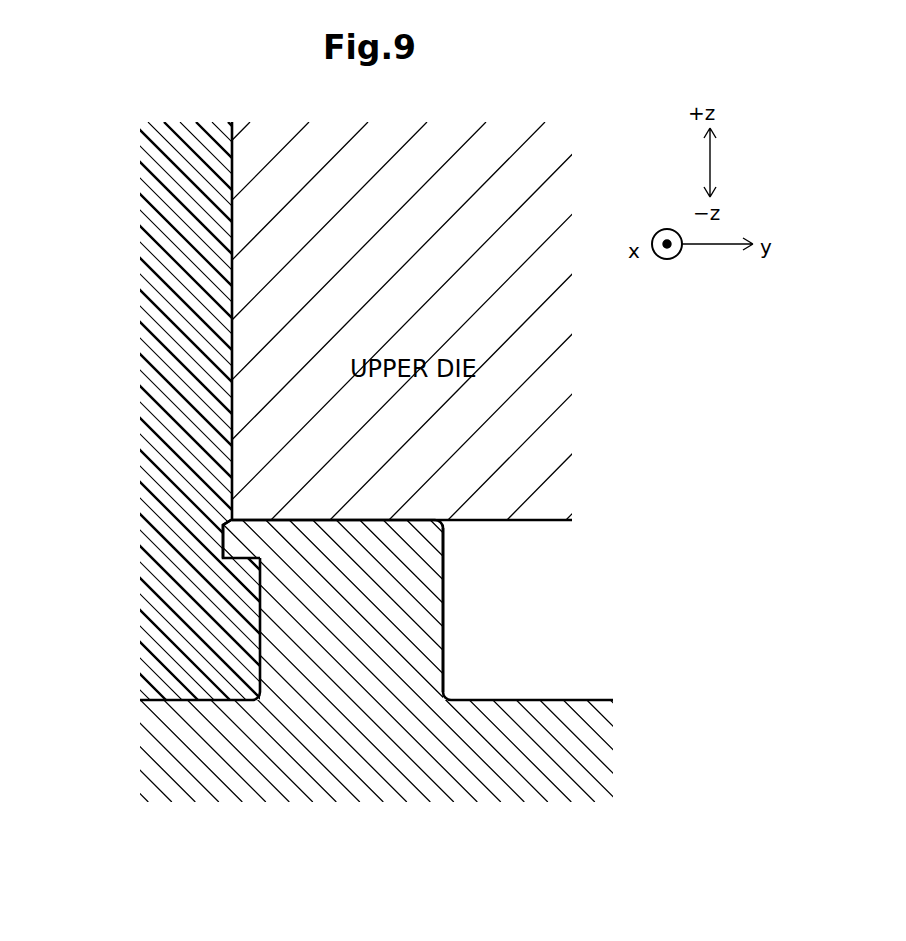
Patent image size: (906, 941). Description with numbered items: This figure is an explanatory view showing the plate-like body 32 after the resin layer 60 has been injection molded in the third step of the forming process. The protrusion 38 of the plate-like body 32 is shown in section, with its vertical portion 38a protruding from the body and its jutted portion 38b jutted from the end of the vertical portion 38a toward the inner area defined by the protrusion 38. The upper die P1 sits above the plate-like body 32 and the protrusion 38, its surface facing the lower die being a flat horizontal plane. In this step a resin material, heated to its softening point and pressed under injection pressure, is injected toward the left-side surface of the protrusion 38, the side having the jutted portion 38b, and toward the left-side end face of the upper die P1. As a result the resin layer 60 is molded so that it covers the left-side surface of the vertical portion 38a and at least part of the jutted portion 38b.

The plate-like body 32 is at (307, 783).
The protrusion 38 is at (463, 590).
The vertical portion 38a is at (430, 658).
The jutted portion 38b is at (224, 527).
The resin layer 60 is at (150, 416).
The upper die P1 is at (542, 520).